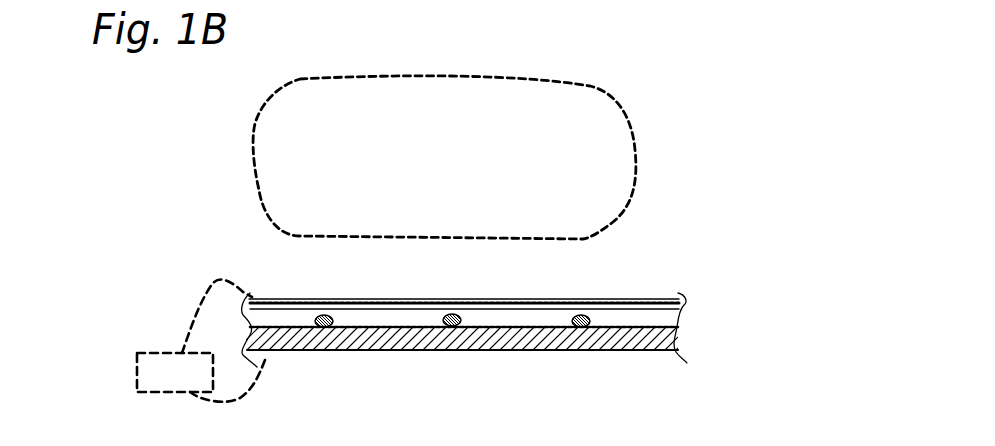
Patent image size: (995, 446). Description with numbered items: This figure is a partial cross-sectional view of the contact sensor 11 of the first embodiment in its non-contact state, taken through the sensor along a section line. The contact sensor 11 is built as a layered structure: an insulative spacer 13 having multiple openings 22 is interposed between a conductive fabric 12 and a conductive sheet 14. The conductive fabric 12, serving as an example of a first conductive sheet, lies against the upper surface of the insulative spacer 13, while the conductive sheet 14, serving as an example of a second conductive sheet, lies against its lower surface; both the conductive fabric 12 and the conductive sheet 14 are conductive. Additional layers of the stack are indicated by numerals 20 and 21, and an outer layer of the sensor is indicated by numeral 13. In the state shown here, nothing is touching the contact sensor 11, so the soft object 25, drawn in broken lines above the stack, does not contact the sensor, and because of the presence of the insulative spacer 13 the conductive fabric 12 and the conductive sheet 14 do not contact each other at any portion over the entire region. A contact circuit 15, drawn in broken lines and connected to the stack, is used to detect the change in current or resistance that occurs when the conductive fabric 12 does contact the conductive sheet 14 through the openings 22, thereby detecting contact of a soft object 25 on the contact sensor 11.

The contact sensor 11 is at (263, 289).
The conductive fabric 12 is at (641, 298).
The insulative spacer 13 is at (683, 307).
The conductive sheet 14 is at (633, 341).
The contact circuit 15 is at (152, 353).
The sensor layer 20 is at (311, 299).
The electrode 21 is at (372, 298).
The openings 22 is at (295, 323).
The soft object 25 is at (621, 104).